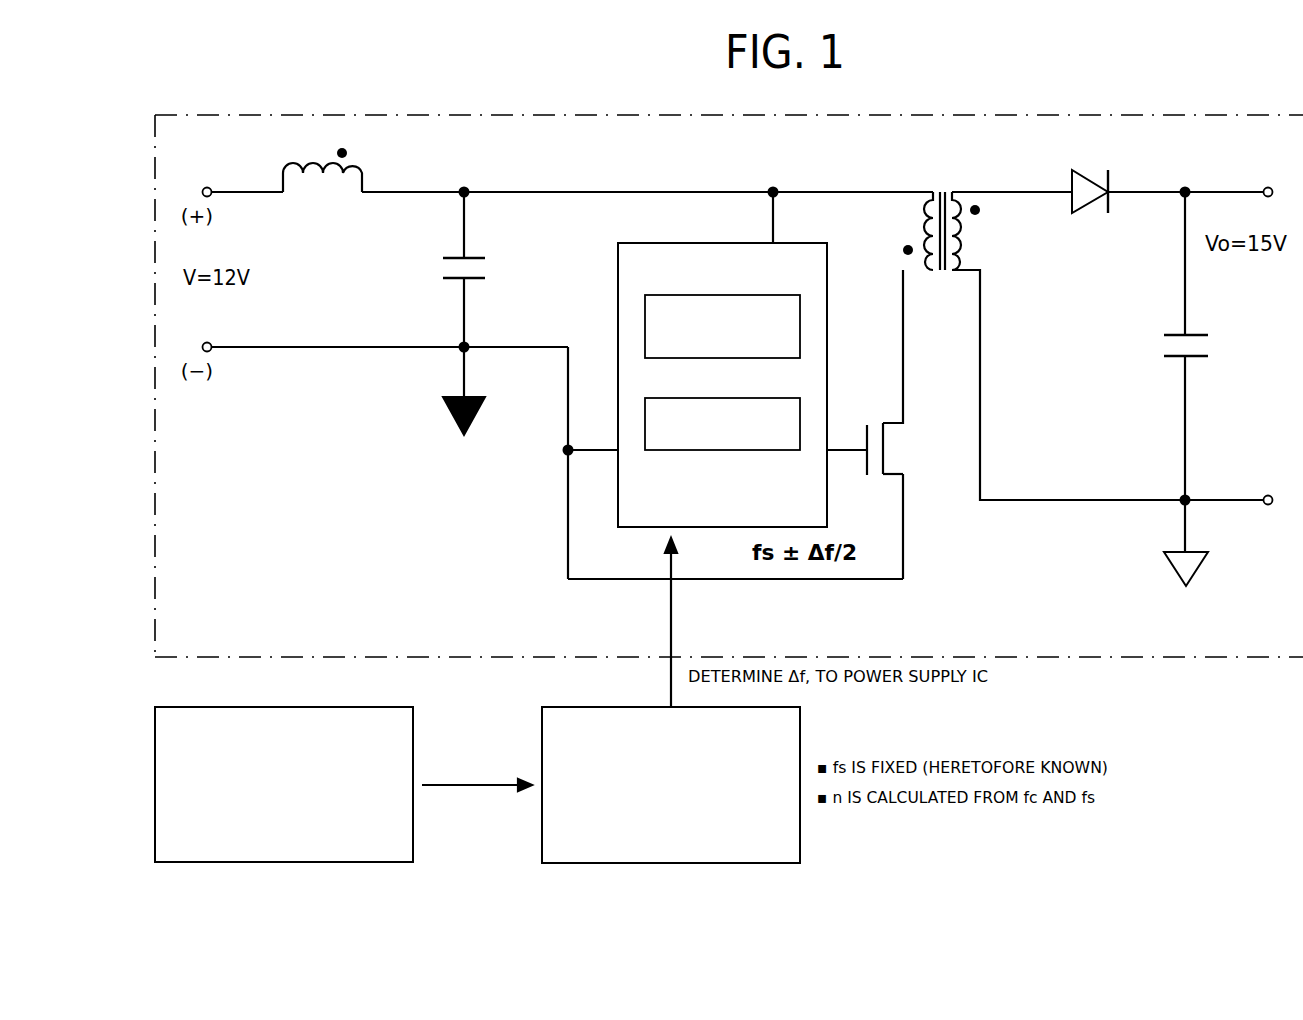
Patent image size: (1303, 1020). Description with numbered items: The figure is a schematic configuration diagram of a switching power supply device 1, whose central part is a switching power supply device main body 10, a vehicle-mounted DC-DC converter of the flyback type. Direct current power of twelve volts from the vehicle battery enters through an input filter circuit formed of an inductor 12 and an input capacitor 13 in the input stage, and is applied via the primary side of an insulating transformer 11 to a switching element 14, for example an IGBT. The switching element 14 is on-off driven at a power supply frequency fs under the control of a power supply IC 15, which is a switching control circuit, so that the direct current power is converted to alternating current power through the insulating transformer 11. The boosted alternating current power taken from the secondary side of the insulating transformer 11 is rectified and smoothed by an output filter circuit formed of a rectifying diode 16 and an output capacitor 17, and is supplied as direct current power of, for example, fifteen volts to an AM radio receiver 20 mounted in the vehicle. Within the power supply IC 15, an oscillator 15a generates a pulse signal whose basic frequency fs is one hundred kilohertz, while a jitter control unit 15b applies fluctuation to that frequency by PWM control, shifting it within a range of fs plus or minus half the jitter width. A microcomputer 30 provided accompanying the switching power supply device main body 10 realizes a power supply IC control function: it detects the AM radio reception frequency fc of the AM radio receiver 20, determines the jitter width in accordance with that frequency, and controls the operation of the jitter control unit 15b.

The switching power supply device 1 is at (1224, 758).
The switching power supply device main body 10 is at (1053, 622).
The insulating transformer 11 is at (938, 278).
The inductor 12 is at (325, 195).
The input capacitor 13 is at (443, 271).
The switching element 14 is at (885, 459).
The power supply IC 15 is at (687, 258).
The oscillator 15a is at (800, 323).
The jitter control unit 15b is at (800, 408).
The rectifying diode 16 is at (1076, 215).
The output capacitor 17 is at (1160, 345).
The AM radio receiver 20 is at (413, 731).
The microcomputer 30 is at (542, 822).